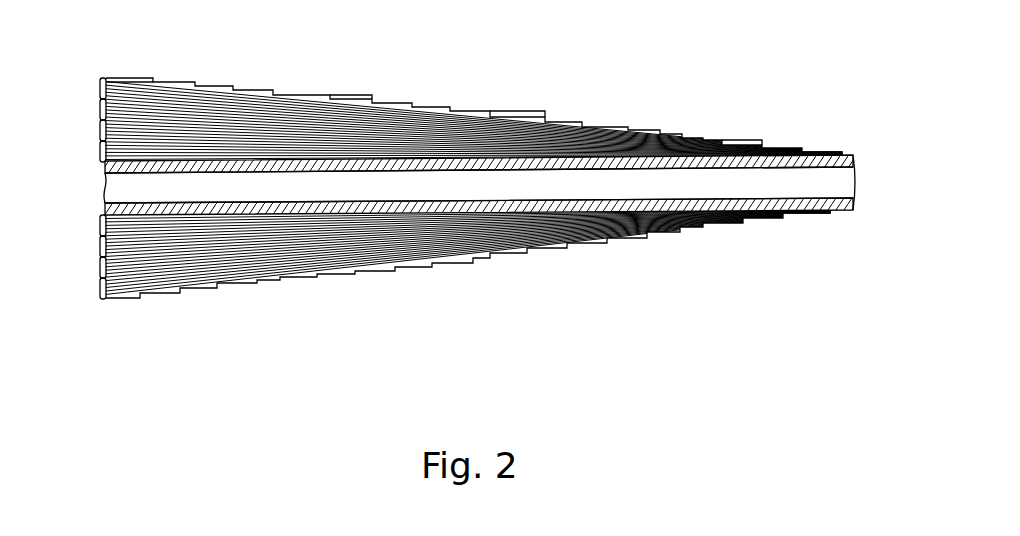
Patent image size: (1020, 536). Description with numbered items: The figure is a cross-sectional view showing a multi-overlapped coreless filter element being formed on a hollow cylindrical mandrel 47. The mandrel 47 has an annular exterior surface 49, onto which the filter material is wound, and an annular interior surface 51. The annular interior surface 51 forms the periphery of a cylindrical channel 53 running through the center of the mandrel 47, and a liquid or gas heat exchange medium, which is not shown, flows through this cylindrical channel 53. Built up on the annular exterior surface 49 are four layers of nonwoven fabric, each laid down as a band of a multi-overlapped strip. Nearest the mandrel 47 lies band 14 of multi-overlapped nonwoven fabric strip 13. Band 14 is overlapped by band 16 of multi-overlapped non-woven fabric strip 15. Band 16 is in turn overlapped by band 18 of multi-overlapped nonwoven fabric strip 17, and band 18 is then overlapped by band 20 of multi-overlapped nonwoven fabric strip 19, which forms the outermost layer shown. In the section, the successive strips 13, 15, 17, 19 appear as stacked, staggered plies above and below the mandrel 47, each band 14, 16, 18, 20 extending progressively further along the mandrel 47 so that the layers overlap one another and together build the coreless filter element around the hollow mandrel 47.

The multi-overlapped nonwoven fabric strip 13 is at (733, 147).
The band 14 is at (100, 153).
The multi-overlapped non-woven fabric strip 15 is at (517, 121).
The band 16 is at (100, 132).
The multi-overlapped nonwoven fabric strip 17 is at (339, 96).
The band 18 is at (100, 108).
The multi-overlapped nonwoven fabric strip 19 is at (137, 77).
The band 20 is at (100, 83).
The hollow cylindrical mandrel 47 is at (838, 153).
The annular exterior surface 49 is at (828, 213).
The annular interior surface 51 is at (774, 197).
The cylindrical channel 53 is at (662, 187).